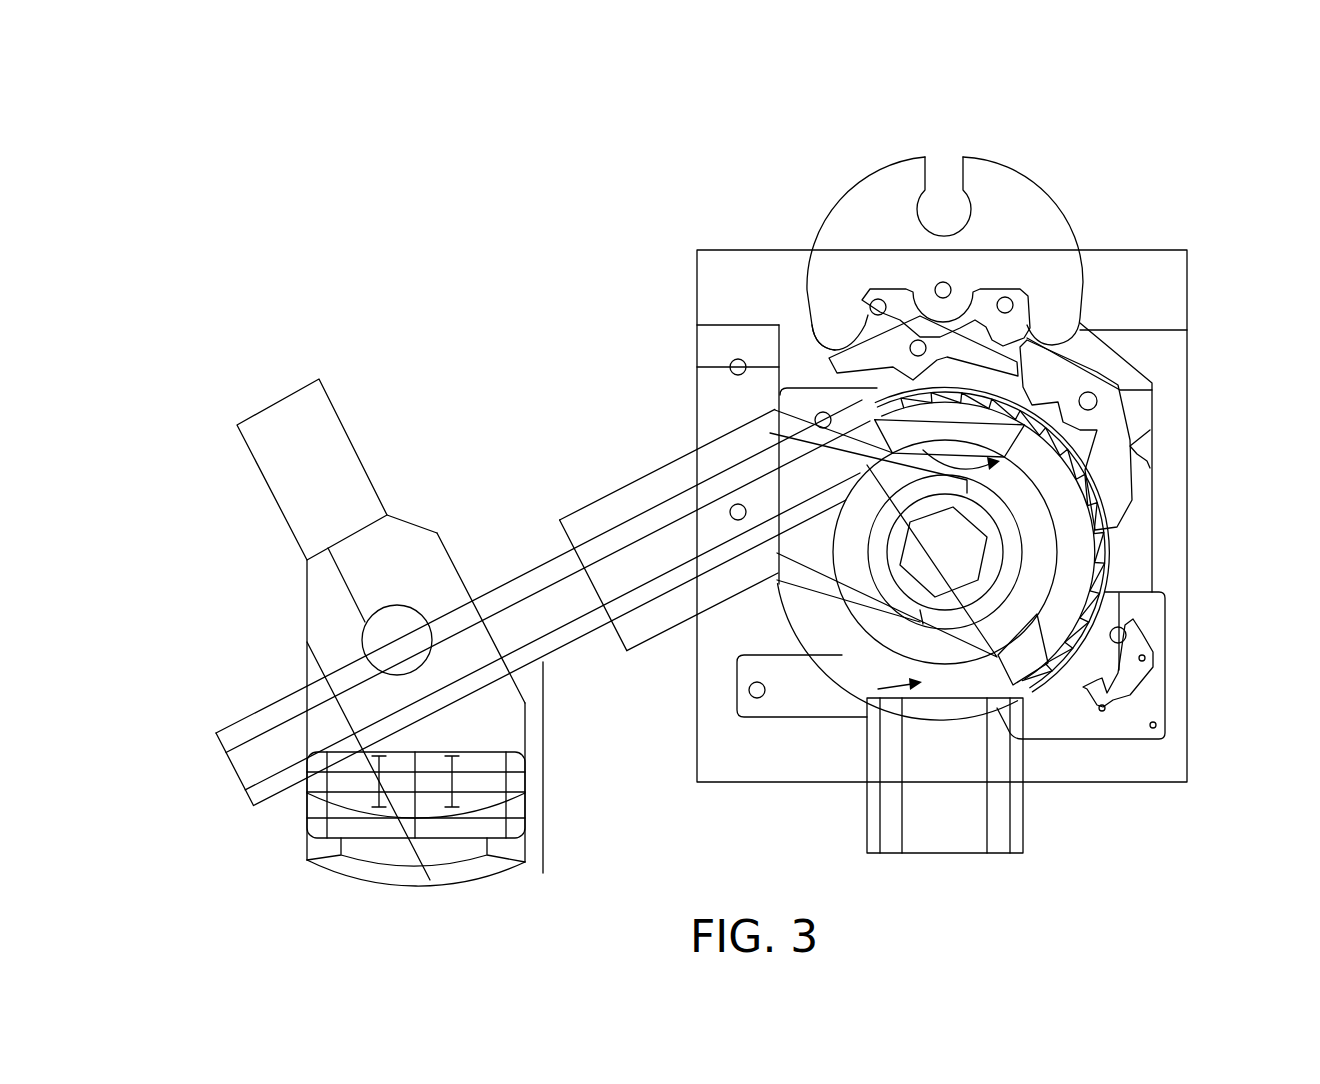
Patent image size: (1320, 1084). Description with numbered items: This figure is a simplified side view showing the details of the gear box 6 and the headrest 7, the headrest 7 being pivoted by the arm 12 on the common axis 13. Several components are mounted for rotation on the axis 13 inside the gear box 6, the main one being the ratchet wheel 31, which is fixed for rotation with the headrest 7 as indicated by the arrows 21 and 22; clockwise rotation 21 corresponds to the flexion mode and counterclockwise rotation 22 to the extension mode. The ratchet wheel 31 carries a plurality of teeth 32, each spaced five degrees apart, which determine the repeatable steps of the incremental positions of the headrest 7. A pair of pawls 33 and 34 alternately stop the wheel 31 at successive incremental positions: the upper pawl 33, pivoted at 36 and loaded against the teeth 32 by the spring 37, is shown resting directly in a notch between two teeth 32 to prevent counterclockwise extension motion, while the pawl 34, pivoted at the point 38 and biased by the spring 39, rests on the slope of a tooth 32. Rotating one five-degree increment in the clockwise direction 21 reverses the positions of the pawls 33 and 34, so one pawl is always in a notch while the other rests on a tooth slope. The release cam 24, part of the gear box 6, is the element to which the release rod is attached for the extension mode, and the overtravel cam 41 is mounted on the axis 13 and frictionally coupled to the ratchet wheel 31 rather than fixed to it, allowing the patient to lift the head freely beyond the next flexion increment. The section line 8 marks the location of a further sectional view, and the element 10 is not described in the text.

The gear box 6 is at (686, 303).
The headrest 7 is at (486, 889).
The section line 8- 8 is at (1190, 484).
The upper arm 10 is at (336, 372).
The arm 12 is at (522, 572).
The common axis 13 is at (945, 552).
The clockwise direction arrow 21 is at (946, 460).
The counterclockwise direction arrow 22 is at (880, 668).
The release cam 24 is at (886, 160).
The ratchet wheel 31 is at (1033, 695).
The teeth 32 is at (1120, 606).
The upper pawl 33 is at (812, 355).
The pawl 34 is at (1153, 380).
The pivot 36 is at (821, 358).
The spring 37 is at (1005, 337).
The pivot point 38 is at (1100, 401).
The spring 39 is at (1153, 443).
The overtravel cam 41 is at (1122, 550).